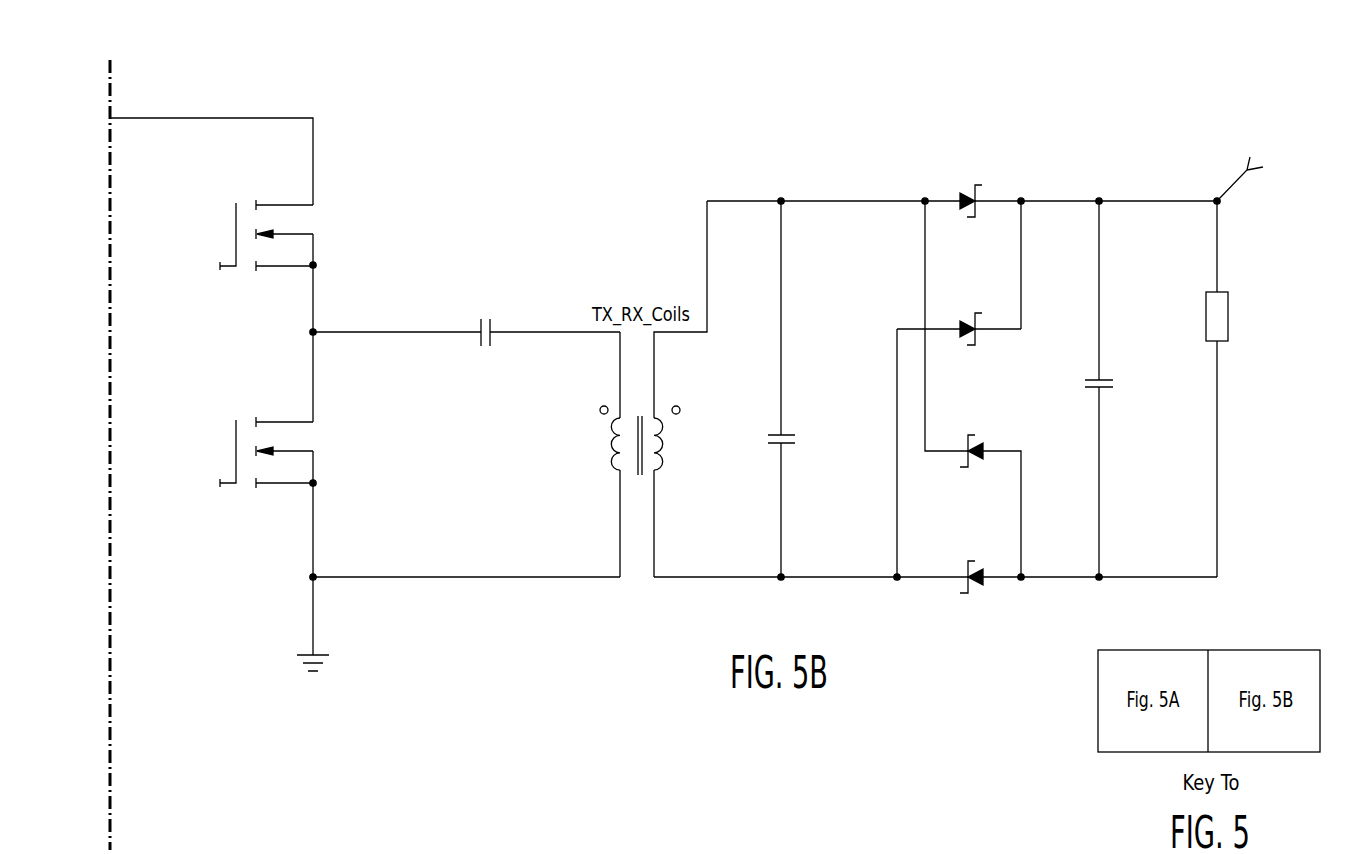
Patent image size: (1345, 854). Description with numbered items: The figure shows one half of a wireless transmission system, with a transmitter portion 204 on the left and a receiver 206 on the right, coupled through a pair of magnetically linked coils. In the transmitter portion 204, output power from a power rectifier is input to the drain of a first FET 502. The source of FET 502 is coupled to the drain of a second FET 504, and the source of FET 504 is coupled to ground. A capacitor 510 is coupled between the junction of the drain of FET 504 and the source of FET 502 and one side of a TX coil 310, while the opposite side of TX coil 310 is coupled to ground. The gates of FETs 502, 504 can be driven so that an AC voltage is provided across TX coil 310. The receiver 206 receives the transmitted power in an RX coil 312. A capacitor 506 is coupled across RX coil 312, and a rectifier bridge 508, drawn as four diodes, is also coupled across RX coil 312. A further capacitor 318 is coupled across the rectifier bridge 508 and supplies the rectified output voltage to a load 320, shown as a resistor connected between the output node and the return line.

The transmitter circuit 204 is at (365, 394).
The receiver 206 is at (976, 387).
The TX coil 310 is at (607, 470).
The RX coil 312 is at (663, 468).
The capacitor 318 is at (1118, 389).
The load 320 is at (1228, 333).
The FET 502 is at (244, 284).
The FET 504 is at (244, 499).
The capacitor 506 is at (800, 441).
The rectifier bridge 508 is at (983, 342).
The capacitor 510 is at (485, 310).